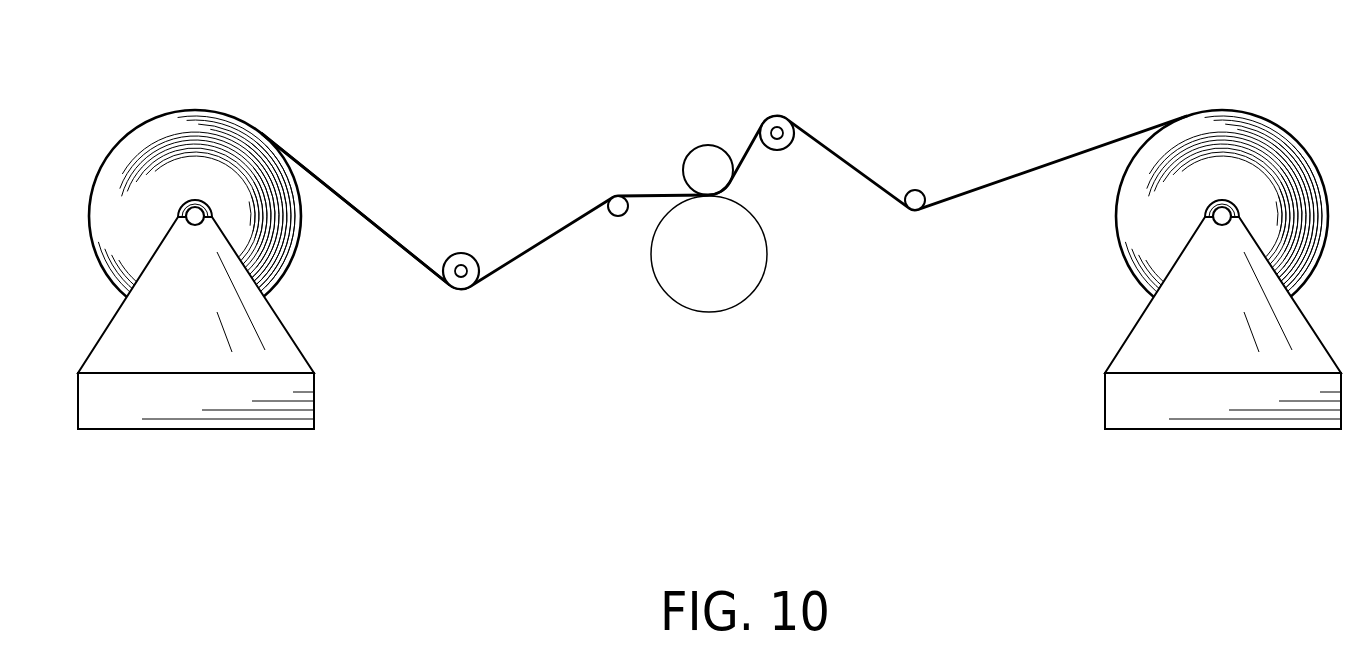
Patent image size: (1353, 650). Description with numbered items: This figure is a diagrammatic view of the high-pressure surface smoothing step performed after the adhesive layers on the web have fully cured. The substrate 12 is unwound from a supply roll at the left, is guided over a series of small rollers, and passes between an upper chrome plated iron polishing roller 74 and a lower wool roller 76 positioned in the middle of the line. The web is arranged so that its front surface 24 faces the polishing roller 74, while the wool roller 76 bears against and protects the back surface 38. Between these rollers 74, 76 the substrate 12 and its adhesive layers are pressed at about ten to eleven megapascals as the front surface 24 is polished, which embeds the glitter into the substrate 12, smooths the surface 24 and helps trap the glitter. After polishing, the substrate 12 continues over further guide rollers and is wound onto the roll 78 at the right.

The substrate 12 is at (369, 215).
The front surface 24 is at (360, 152).
The back surface 38 is at (383, 277).
The polishing roller 74 is at (218, 142).
The wool roller 76 is at (738, 266).
The roll 78 is at (1237, 142).